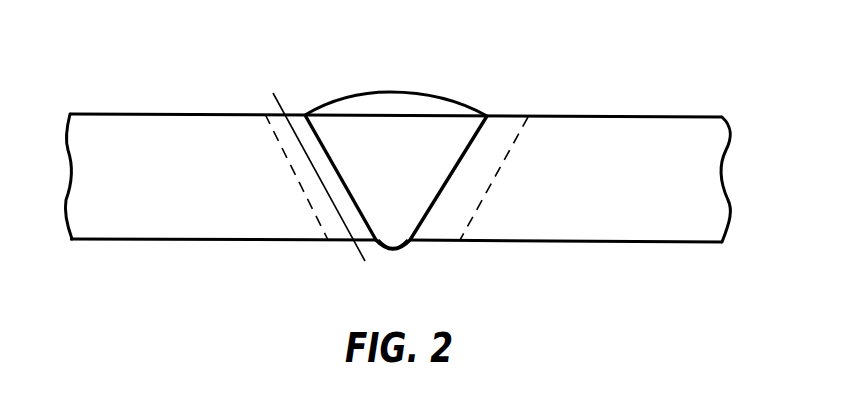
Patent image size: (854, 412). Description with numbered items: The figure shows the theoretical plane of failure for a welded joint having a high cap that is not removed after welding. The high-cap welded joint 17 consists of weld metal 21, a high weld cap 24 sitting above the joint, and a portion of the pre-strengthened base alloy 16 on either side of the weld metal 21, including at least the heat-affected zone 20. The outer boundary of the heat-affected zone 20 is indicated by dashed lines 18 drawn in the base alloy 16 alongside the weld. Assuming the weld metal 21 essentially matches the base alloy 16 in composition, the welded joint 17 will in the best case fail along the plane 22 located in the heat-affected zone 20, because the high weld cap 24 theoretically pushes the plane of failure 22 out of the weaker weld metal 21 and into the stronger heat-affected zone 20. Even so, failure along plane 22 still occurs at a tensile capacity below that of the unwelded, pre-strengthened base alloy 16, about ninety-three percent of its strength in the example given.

The base alloy 16 is at (140, 128).
The high-cap welded joint 17 is at (420, 73).
The dashed lines 18 is at (315, 201).
The heat-affected zone 20 is at (458, 210).
The weld metal 21 is at (402, 222).
The plane of failure 22 is at (273, 95).
The high weld cap 24 is at (452, 110).